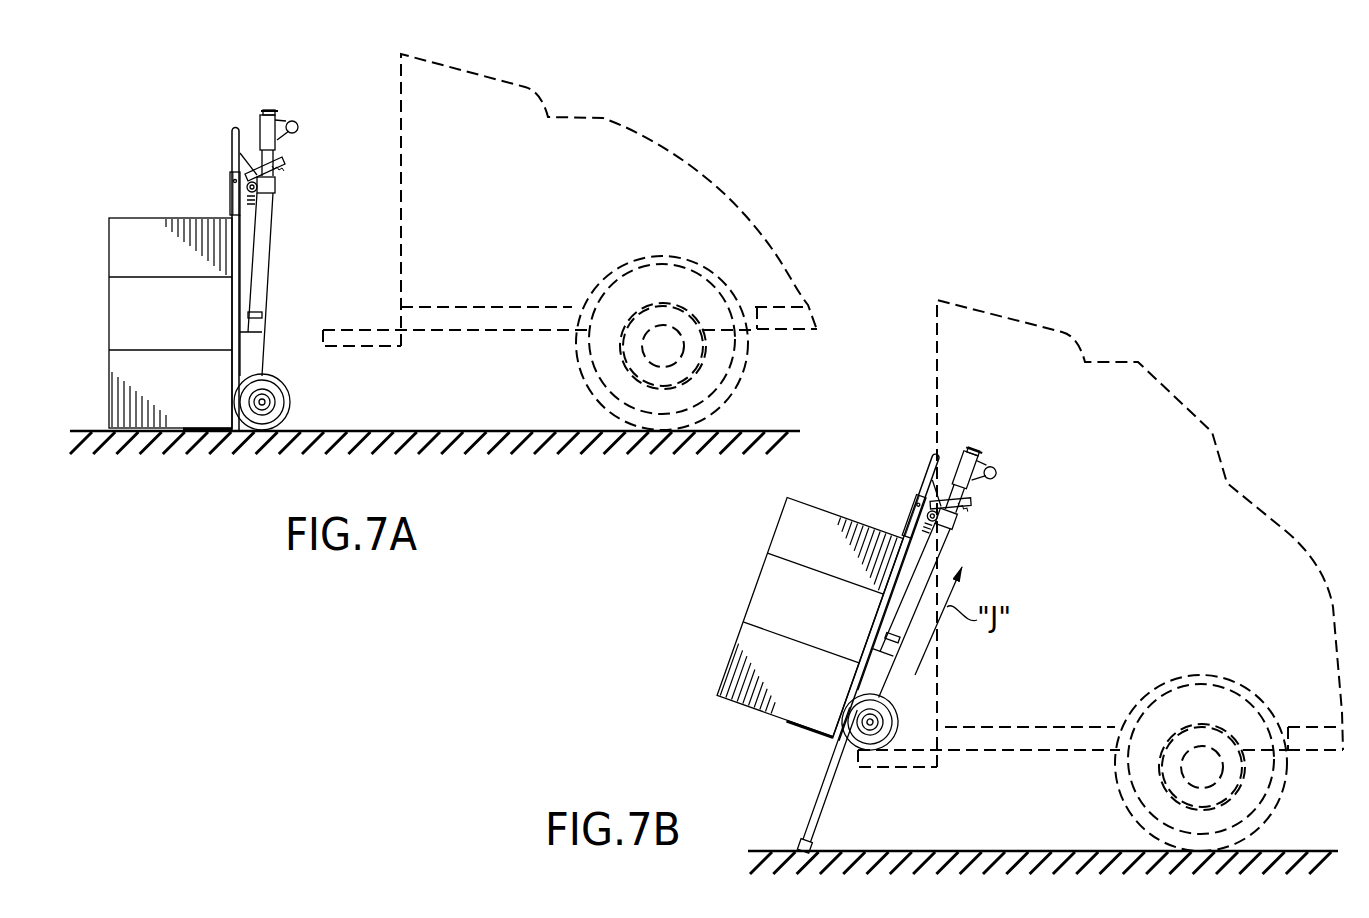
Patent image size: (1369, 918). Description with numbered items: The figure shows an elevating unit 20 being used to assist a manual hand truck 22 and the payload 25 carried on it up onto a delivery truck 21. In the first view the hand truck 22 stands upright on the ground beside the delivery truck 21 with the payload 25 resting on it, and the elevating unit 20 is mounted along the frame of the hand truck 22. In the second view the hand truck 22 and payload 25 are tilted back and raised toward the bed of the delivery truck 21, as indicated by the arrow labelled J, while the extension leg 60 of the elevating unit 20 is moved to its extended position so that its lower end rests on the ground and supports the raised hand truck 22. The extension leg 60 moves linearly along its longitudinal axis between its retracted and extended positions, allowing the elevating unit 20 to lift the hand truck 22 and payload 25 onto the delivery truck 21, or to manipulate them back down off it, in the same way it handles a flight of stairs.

In FIG. 7A, the elevating unit 20 is at (249, 270).
In FIG. 7B, the elevating unit 20 is at (909, 595).
In FIG. 7A, the delivery truck 21 is at (481, 295).
In FIG. 7B, the delivery truck 21 is at (1013, 708).
In FIG. 7A, the hand truck 22 is at (182, 187).
In FIG. 7B, the hand truck 22 is at (858, 502).
In FIG. 7A, the payload 25 is at (137, 262).
In FIG. 7B, the payload 25 is at (807, 528).
In FIG. 7B, the extension leg 60 is at (825, 798).